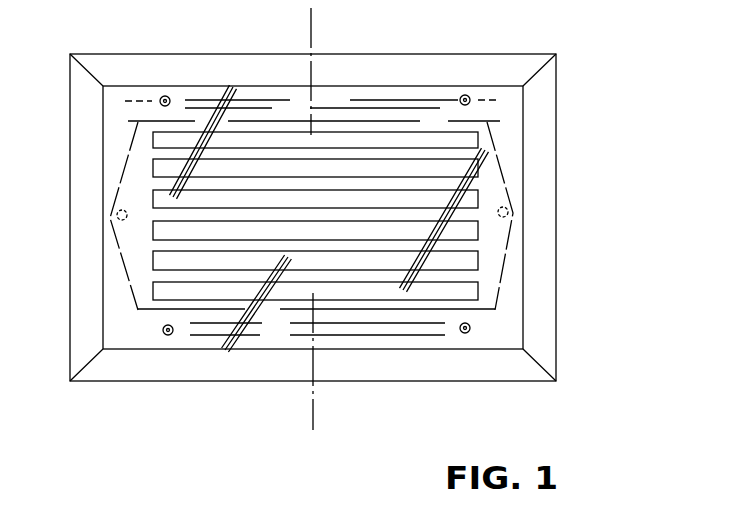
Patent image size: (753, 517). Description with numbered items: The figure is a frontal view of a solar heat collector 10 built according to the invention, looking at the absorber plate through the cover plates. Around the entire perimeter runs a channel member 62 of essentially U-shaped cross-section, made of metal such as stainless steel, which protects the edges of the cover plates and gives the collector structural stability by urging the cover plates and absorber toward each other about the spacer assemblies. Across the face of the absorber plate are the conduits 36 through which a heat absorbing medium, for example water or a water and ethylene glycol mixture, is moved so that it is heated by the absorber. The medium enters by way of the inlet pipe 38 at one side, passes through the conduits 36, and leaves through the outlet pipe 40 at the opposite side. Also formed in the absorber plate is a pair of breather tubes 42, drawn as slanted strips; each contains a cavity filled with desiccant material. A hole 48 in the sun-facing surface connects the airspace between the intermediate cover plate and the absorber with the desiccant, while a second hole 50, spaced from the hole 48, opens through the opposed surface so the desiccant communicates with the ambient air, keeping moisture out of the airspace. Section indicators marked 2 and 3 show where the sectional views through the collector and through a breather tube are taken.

The solar heat collector 10 is at (353, 219).
The channel member 62 is at (568, 285).
The conduits 36 is at (456, 272).
The breather tubes 42 is at (255, 91).
The hole 48 is at (468, 97).
The second hole 50 is at (170, 99).
The inlet pipe 38 is at (112, 218).
The outlet pipe 40 is at (515, 205).
The section line 2- 2 is at (281, 30).
The section line 3- 3 is at (138, 119).